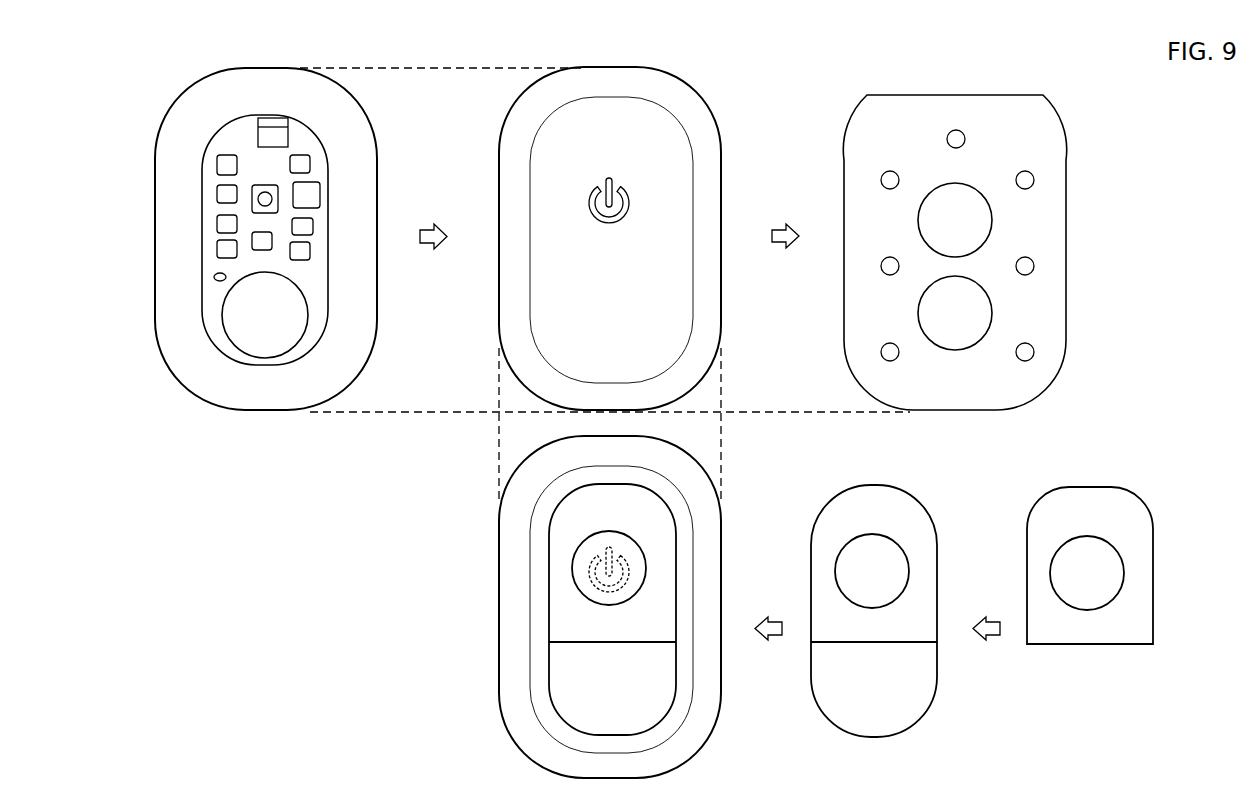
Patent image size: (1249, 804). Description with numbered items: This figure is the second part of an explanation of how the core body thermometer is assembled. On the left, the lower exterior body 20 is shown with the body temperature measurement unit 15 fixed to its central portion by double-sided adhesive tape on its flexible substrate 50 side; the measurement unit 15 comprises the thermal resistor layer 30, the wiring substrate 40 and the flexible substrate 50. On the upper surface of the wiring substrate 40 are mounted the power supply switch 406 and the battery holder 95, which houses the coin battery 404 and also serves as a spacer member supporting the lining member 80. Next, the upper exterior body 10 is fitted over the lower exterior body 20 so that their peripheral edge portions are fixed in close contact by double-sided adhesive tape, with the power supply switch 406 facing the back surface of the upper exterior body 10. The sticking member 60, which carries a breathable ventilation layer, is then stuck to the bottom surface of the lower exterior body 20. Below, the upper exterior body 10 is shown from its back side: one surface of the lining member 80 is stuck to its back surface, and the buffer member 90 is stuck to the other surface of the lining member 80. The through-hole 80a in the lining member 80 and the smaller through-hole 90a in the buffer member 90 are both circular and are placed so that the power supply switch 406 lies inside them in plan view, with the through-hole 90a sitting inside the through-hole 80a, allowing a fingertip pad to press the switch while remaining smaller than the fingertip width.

The upper exterior body 10 is at (713, 197).
The body temperature measurement unit 15 is at (283, 240).
The lower exterior body 20 is at (370, 198).
The thermal resistor layer 30 is at (283, 240).
The wiring substrate 40 is at (283, 240).
The flexible substrate 50 is at (283, 240).
The sticking member 60 is at (853, 295).
The lining member 80 is at (667, 693).
The through-hole 80a is at (850, 566).
The buffer member 90 is at (878, 610).
The through-hole 90a is at (848, 570).
The battery holder 95 is at (200, 315).
The coin battery 404 is at (232, 317).
The power supply switch 406 is at (256, 198).